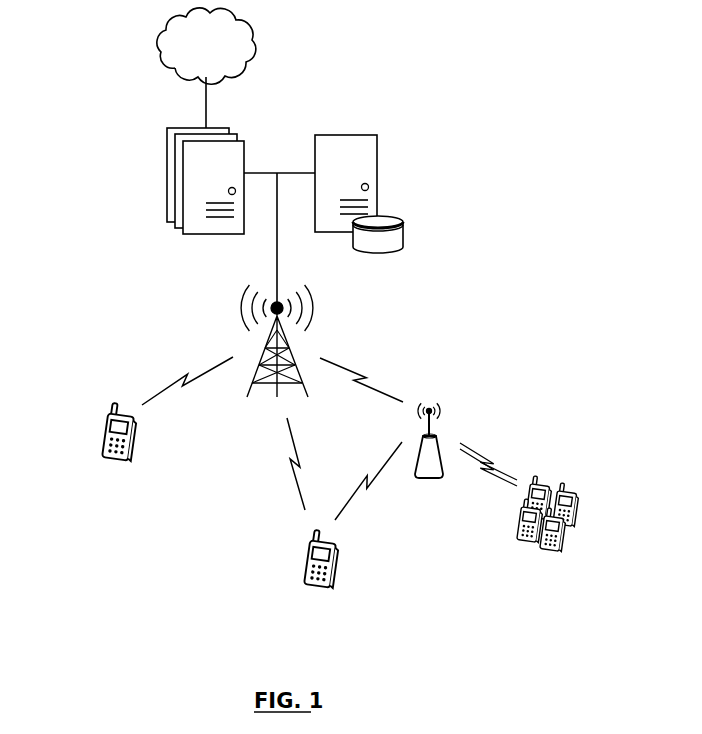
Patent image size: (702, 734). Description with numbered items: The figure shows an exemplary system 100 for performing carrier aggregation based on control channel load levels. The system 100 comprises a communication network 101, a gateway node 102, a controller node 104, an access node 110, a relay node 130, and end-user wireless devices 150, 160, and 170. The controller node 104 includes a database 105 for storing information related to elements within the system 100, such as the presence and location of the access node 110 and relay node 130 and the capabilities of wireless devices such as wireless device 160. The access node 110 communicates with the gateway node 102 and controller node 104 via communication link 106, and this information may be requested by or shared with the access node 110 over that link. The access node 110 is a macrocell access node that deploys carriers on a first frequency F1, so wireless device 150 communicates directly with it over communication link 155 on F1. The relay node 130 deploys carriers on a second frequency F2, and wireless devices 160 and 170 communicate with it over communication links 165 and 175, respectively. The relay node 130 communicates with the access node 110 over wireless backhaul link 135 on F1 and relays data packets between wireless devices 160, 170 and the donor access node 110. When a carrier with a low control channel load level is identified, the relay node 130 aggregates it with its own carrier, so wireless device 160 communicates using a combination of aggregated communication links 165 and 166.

The system 100 is at (309, 75).
The communication network 101 is at (222, 55).
The gateway node 102 is at (168, 128).
The controller node 104 is at (377, 134).
The database 105 is at (401, 217).
The communication link 106 is at (277, 250).
The access node 110 is at (262, 366).
The relay node 130 is at (437, 445).
The communication link 135 is at (361, 378).
The wireless device 150 is at (110, 424).
The communication link 155 is at (178, 382).
The wireless device 160 is at (306, 570).
The communication link 165 is at (345, 514).
The communication link 166 is at (296, 488).
The wireless devices 170 is at (510, 552).
The communication link 175 is at (503, 468).